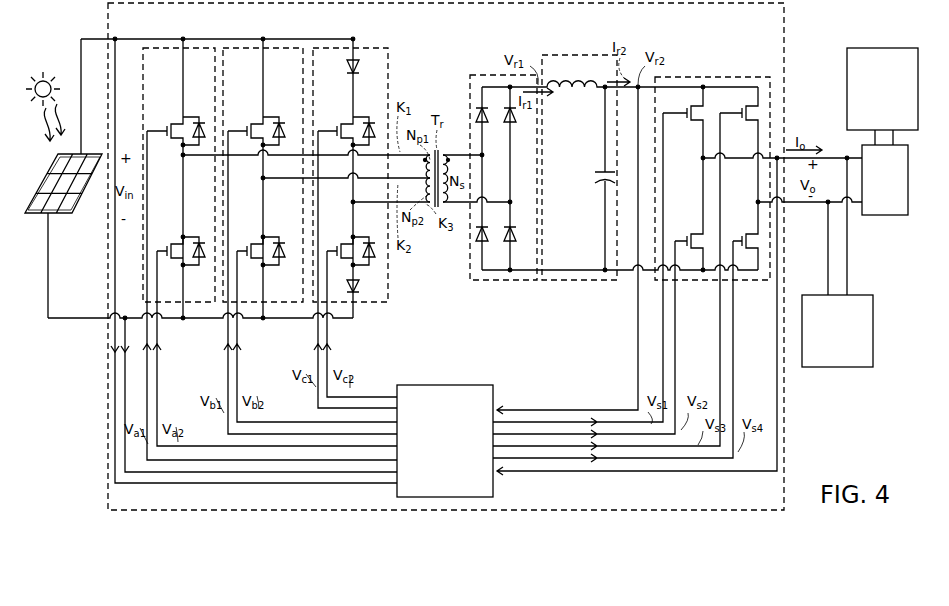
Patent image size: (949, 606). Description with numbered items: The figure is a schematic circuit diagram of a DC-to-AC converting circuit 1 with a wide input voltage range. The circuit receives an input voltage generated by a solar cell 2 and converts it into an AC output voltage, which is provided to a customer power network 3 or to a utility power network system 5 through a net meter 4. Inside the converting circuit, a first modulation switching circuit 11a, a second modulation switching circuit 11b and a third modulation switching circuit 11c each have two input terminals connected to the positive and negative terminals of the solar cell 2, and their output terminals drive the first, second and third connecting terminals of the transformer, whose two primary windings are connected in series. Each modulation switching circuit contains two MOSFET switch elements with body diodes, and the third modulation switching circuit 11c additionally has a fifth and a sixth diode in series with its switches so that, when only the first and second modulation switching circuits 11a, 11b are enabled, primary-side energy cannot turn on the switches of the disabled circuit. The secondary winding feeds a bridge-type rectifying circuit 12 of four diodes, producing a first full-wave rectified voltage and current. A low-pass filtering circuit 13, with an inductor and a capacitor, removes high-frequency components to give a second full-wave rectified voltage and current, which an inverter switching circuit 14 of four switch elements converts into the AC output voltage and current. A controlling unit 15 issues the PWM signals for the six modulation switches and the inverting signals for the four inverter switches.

The DC-to-AC converting circuit 1 is at (786, 76).
The solar cell 2 is at (80, 205).
The customer power network 3 is at (874, 331).
The net meter 4 is at (880, 215).
The utility power network system 5 is at (885, 48).
The first modulation switching circuit 11a is at (173, 47).
The second modulation switching circuit 11b is at (253, 47).
The third modulation switching circuit 11c is at (338, 47).
The rectifying circuit 12 is at (505, 282).
The filtering circuit 13 is at (572, 282).
The inverter switching circuit 14 is at (698, 76).
The controlling unit 15 is at (451, 385).